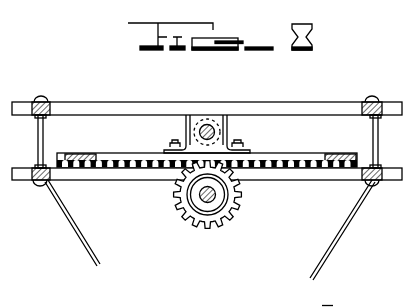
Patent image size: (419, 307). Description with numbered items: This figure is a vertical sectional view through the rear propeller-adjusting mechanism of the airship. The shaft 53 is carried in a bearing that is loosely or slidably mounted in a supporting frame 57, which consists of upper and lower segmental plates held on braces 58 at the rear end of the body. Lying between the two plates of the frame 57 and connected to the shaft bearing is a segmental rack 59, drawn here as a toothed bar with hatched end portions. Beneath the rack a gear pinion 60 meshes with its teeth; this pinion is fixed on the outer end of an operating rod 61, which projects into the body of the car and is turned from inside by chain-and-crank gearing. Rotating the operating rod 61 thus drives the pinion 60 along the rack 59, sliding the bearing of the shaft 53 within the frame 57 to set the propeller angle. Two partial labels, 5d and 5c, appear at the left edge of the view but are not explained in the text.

The shaft 53 is at (213, 126).
The supporting frame 57 is at (320, 107).
The braces 58 is at (38, 125).
The segmental rack 59 is at (100, 155).
The gear pinion 60 is at (182, 208).
The operating rod 61 is at (215, 198).
The part 5d is at (11, 77).
The part 5c is at (11, 236).